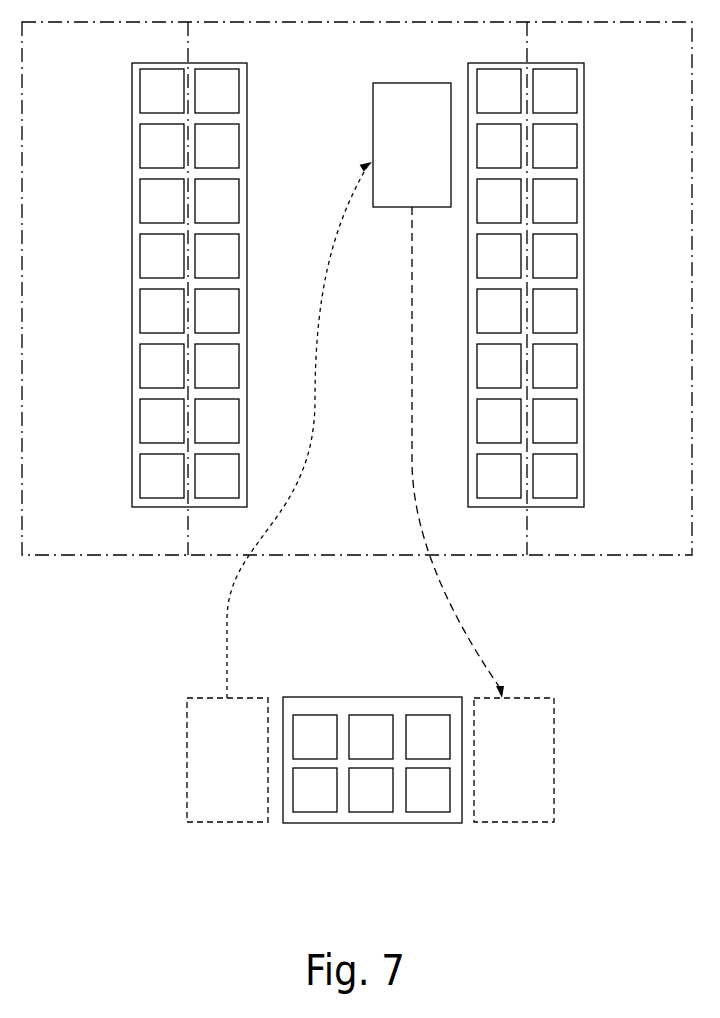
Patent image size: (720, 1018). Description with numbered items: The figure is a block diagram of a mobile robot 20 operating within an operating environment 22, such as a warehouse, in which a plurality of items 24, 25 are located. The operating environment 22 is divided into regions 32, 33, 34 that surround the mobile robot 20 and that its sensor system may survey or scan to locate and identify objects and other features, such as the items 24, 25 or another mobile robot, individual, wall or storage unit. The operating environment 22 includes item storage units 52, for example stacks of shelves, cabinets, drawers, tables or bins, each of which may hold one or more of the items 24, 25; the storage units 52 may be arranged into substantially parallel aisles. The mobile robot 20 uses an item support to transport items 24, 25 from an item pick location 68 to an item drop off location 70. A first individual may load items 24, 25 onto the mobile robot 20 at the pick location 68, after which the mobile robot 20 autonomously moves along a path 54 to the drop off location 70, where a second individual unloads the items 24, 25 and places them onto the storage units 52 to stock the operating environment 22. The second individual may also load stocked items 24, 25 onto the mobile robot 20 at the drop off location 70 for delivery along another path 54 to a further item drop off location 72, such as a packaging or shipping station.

The mobile robot 20 is at (400, 150).
The operating environment 22 is at (120, 603).
The item 24 is at (213, 74).
The item 25 is at (567, 148).
The region 32 is at (88, 349).
The region 33 is at (364, 349).
The region 34 is at (649, 349).
The item storage unit 52 is at (155, 507).
The path 54 is at (234, 606).
The item pick location 68 is at (185, 782).
The item drop off location 70 is at (370, 114).
The item drop off location 72 is at (556, 780).